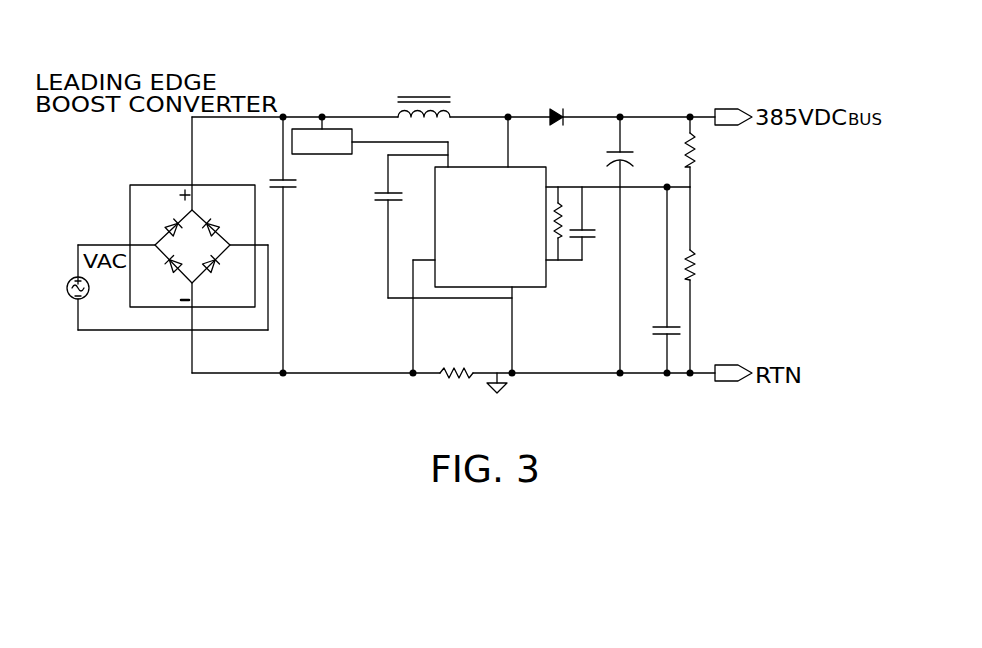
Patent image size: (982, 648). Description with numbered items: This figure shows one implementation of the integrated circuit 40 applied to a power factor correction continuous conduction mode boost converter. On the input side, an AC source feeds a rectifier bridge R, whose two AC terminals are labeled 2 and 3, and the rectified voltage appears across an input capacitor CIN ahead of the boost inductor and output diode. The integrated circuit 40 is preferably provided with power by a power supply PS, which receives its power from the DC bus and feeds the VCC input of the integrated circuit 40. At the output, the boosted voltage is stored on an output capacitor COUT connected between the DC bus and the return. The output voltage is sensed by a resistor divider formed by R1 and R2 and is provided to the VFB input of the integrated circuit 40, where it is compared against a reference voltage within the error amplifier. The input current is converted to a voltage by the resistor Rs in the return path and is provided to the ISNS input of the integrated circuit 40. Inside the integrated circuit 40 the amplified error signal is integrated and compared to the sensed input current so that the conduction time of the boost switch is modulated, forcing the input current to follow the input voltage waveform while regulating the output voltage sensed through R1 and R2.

The rectifier bridge R is at (138, 190).
The first AC input terminal 2 is at (116, 233).
The second AC input terminal 3 is at (253, 275).
The input capacitor CIN is at (296, 245).
The power supply PS is at (343, 128).
The integrated circuit 40 is at (482, 178).
The resistor Rs is at (456, 387).
The output capacitor COUT is at (628, 150).
The resistor divider resistor R1 is at (709, 152).
The resistor divider resistor R2 is at (709, 280).